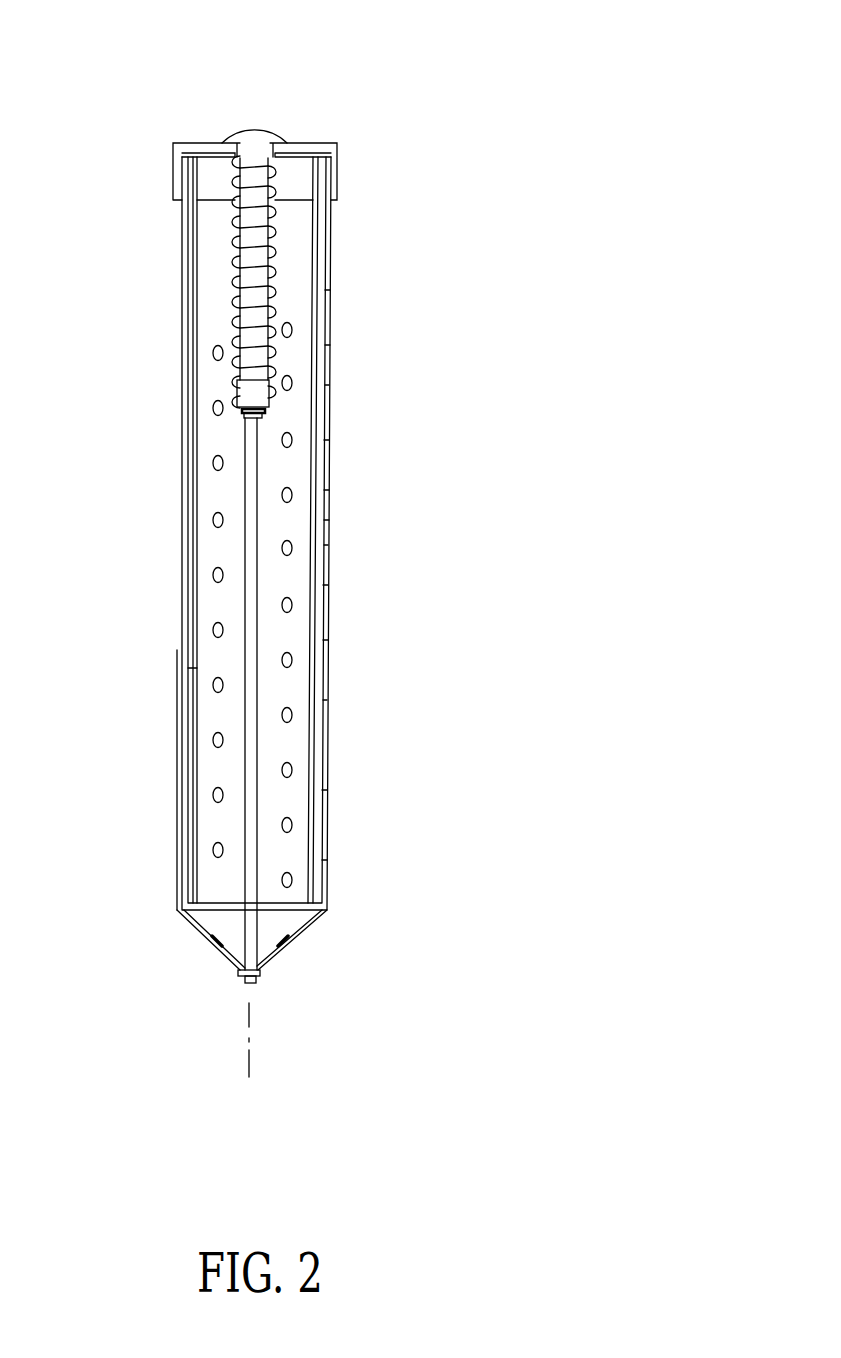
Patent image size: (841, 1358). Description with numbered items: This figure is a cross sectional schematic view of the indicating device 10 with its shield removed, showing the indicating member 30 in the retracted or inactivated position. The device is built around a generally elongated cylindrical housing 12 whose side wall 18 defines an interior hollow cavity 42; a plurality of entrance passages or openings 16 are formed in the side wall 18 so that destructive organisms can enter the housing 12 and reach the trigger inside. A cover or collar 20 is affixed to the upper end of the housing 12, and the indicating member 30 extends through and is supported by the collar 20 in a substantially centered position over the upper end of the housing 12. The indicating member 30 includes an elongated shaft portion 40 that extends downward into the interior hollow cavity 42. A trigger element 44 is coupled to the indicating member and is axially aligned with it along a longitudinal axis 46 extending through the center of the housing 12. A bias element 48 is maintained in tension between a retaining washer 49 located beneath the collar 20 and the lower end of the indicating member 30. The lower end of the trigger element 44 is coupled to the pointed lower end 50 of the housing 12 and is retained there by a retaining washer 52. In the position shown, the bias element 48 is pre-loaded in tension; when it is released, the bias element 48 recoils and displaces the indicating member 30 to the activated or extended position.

The indicating device 10 is at (398, 40).
The housing 12 is at (356, 460).
The entrance passages or openings 16 is at (292, 770).
The side wall 18 is at (180, 535).
The cover or collar 20 is at (197, 143).
The indicating member 30 is at (270, 108).
The elongated shaft portion 40 is at (256, 282).
The interior hollow cavity 42 is at (289, 632).
The trigger element 44 is at (258, 688).
The longitudinal axis 46 is at (249, 1060).
The bias element 48 is at (240, 303).
The retaining washer 49 is at (318, 155).
The pointed lower end 50 is at (273, 953).
The retaining washer 52 is at (238, 975).